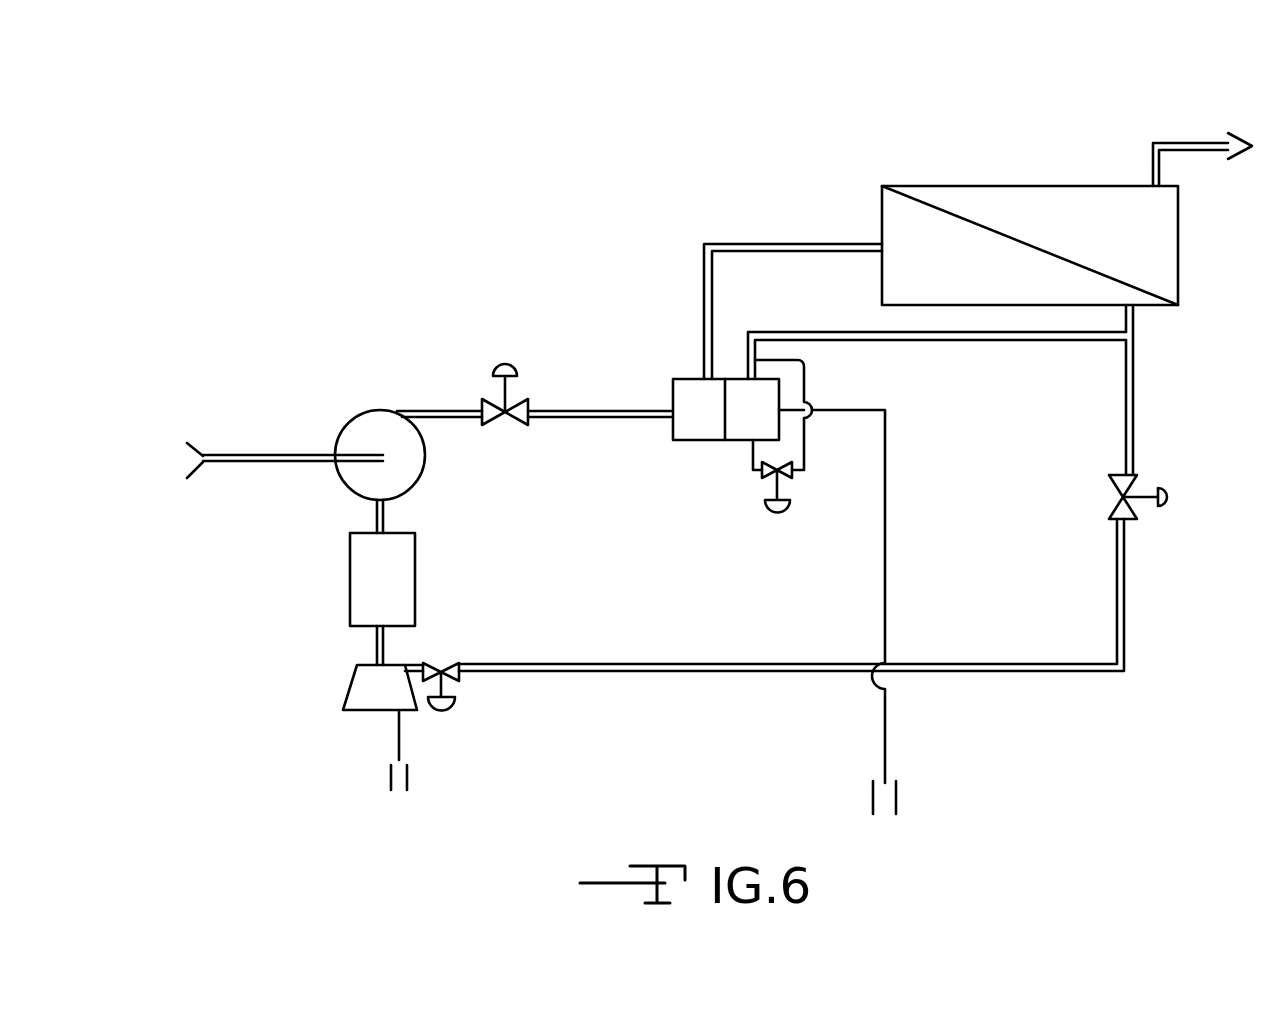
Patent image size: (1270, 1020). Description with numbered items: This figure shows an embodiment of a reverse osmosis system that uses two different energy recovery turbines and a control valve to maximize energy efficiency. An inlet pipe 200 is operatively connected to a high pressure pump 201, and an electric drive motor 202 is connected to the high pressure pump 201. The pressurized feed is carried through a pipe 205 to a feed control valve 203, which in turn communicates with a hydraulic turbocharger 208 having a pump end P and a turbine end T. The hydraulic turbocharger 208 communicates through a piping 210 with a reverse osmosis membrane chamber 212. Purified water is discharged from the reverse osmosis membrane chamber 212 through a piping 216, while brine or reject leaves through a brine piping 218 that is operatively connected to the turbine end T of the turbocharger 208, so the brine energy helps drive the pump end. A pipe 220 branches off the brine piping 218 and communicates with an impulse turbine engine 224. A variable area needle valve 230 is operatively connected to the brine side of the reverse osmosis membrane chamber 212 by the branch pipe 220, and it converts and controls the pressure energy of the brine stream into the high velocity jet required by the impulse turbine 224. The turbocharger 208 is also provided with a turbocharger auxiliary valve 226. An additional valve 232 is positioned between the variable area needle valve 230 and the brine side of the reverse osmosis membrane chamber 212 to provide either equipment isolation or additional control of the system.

The inlet pipe 200 is at (258, 452).
The high pressure pump 201 is at (362, 412).
The electric drive motor 202 is at (350, 570).
The feed control valve 203 is at (505, 362).
The pipe 205 is at (440, 408).
The hydraulic turbocharger 208 is at (685, 378).
The piping 210 is at (765, 242).
The reverse osmosis membrane chamber 212 is at (988, 185).
The piping 216 is at (1200, 142).
The brine piping 218 is at (952, 342).
The pipe 220 is at (685, 662).
The impulse turbine engine 224 is at (348, 688).
The turbocharger auxiliary valve 226 is at (775, 512).
The variable area needle valve 230 is at (455, 664).
The additional valve 232 is at (1140, 481).